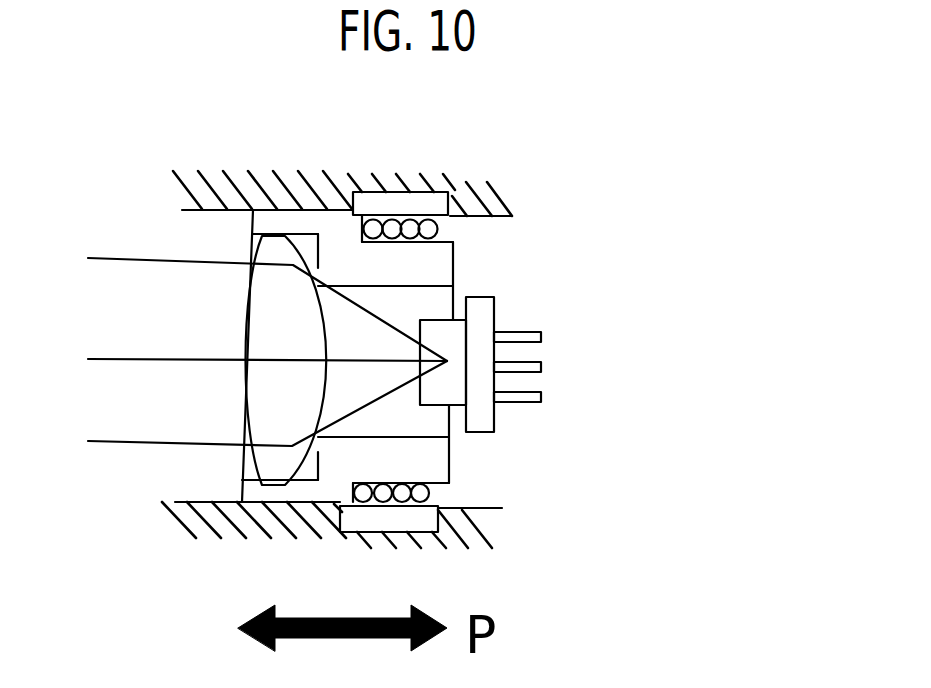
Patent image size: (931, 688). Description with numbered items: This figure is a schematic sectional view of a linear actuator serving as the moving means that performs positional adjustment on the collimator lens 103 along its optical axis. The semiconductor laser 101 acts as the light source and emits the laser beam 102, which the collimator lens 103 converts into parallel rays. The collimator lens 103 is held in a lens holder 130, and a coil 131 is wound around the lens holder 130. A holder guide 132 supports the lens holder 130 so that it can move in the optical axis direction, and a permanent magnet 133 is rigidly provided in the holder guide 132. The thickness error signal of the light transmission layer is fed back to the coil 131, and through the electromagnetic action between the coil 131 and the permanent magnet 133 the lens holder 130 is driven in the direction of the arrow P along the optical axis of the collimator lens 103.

The semiconductor laser 101 is at (478, 397).
The laser beam 102 is at (163, 445).
The collimator lens 103 is at (243, 263).
The lens holder 130 is at (430, 465).
The coil 131 is at (437, 232).
The holder guide 132 is at (293, 178).
The permanent magnet 133 is at (450, 186).